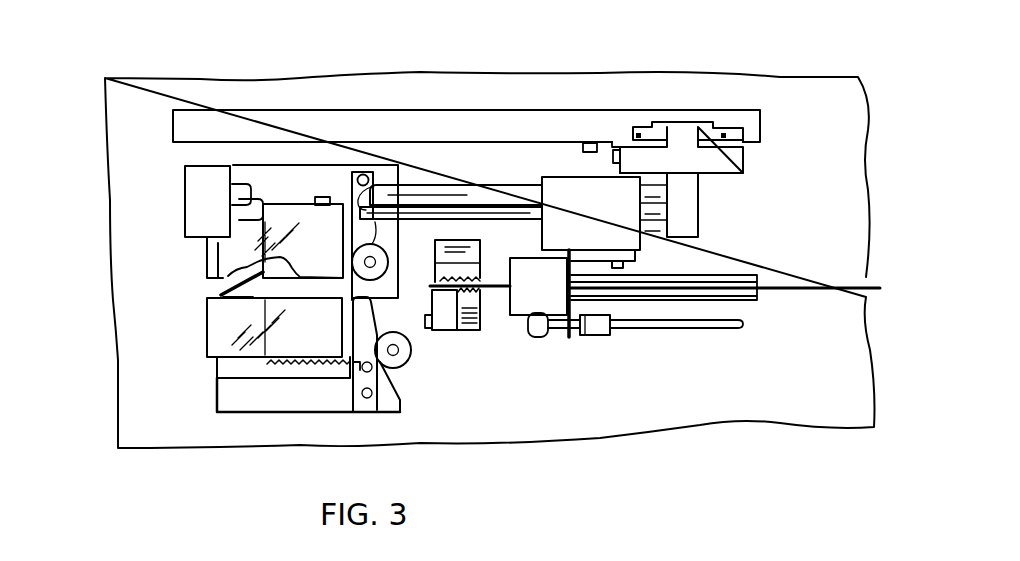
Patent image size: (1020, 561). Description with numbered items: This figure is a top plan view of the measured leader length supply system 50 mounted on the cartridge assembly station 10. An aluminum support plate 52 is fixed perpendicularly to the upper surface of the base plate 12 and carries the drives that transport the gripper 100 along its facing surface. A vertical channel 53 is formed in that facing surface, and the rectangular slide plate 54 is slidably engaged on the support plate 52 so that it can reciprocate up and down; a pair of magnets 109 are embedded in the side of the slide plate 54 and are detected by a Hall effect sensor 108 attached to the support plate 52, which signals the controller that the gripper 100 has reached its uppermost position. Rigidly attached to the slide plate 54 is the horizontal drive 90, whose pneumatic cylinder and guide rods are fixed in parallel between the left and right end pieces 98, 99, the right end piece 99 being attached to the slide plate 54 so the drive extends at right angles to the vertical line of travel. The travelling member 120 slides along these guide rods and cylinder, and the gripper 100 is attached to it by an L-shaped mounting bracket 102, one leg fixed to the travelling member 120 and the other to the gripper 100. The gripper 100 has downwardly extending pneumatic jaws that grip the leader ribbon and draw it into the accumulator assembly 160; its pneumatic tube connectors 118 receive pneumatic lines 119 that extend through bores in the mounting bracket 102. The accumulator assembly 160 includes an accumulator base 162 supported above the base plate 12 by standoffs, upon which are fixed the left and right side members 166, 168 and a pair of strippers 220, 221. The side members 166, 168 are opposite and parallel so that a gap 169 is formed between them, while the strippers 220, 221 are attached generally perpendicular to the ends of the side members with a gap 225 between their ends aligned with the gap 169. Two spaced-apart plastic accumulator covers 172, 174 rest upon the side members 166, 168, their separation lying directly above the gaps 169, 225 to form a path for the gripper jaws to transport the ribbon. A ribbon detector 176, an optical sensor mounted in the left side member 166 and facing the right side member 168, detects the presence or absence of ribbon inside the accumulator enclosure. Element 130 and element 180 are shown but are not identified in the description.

The cartridge assembly station 10 is at (426, 234).
The base plate 12 is at (141, 109).
The measured leader length supply system 50 is at (784, 71).
The support plate 52 is at (745, 133).
The vertical channel 53 is at (708, 132).
The slide plate 54 is at (728, 160).
The horizontal drive 90 is at (170, 183).
The left end piece 98 is at (197, 193).
The right end piece 99 is at (683, 200).
The gripper 100 is at (515, 307).
The L-shaped mounting bracket 102 is at (571, 338).
The Hall effect sensor 108 is at (589, 141).
The magnets 109 is at (612, 141).
The pneumatic tube connectors 118 is at (594, 334).
The pneumatic lines 119 is at (677, 329).
The travelling member 120 is at (562, 188).
The sheet feeder 130 is at (454, 342).
The accumulator assembly 160 is at (185, 370).
The accumulator base 162 is at (323, 400).
The left side member 166 is at (230, 252).
The right side member 168 is at (253, 370).
The gap 169 is at (215, 288).
The accumulator cover 172 is at (312, 237).
The accumulator cover 174 is at (217, 328).
The ribbon detector 176 is at (320, 197).
The roller nip 180 is at (380, 287).
The stripper 220 is at (365, 171).
The stripper 221 is at (372, 380).
The gap 225 is at (355, 285).